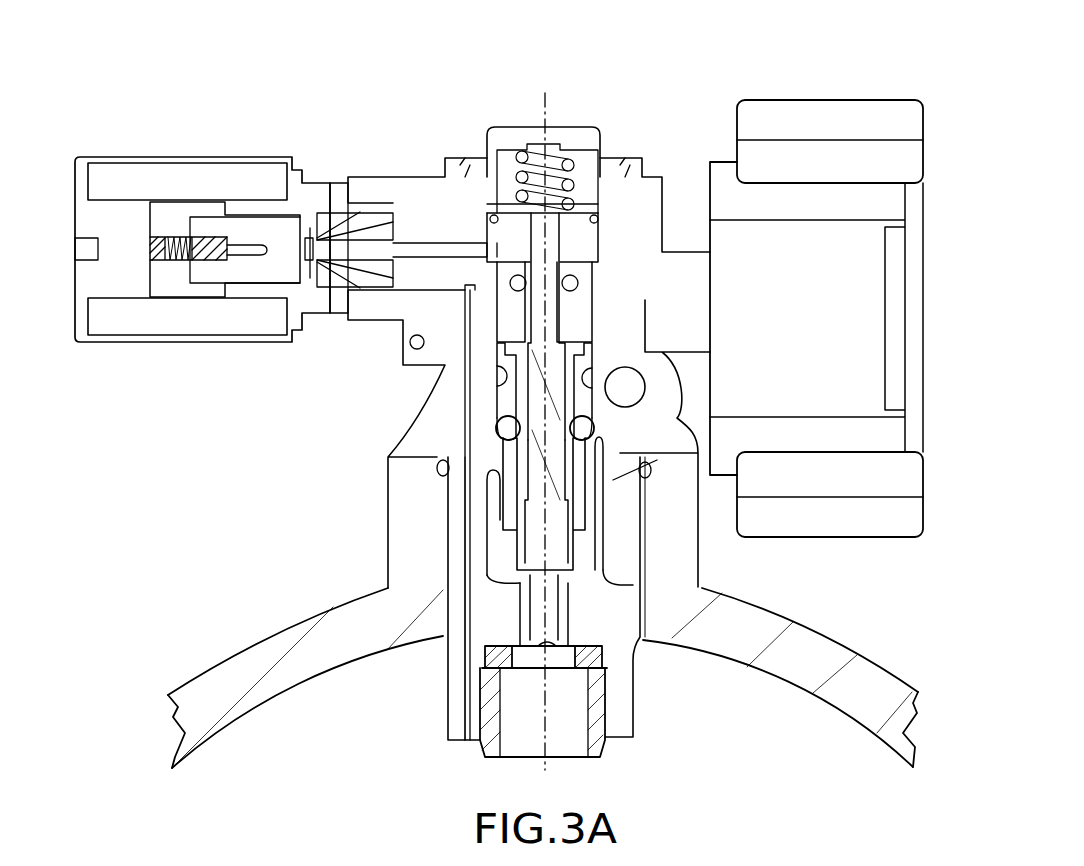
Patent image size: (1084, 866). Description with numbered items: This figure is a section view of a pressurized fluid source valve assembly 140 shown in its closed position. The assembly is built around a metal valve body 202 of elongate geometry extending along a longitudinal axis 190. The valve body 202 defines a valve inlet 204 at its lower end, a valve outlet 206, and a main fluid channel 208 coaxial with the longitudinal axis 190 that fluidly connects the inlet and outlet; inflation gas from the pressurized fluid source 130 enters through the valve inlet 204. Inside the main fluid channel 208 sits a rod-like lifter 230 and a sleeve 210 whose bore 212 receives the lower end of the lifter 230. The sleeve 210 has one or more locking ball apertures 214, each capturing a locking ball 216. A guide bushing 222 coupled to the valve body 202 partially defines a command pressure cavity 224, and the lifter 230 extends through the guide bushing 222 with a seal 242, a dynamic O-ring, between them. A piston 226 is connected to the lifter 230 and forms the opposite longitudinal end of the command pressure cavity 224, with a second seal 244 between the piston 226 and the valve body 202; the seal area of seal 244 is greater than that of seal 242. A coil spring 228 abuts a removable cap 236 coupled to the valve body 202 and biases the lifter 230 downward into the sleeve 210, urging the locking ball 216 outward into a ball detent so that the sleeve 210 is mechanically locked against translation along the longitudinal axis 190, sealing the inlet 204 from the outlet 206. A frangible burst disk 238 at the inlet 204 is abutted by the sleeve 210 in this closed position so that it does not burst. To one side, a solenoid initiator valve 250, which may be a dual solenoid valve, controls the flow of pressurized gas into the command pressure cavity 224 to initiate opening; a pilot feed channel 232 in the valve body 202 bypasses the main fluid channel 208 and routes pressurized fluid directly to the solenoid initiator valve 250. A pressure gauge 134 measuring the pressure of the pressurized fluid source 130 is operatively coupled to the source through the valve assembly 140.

The pressurized fluid source 130 is at (235, 650).
The pressure gauge 134 is at (852, 540).
The valve assembly 140 is at (332, 127).
The longitudinal axis 190 is at (545, 93).
The valve body 202 is at (408, 185).
The valve inlet 204 is at (552, 720).
The valve outlet 206 is at (612, 470).
The main fluid channel 208 is at (612, 525).
The sleeve 210 is at (525, 608).
The bore 212 is at (520, 520).
The locking ball aperture 214 is at (497, 450).
The locking ball 216 is at (496, 427).
The guide bushing 222 is at (593, 272).
The command pressure cavity 224 is at (583, 243).
The piston 226 is at (600, 216).
The spring 228 is at (568, 182).
The lifter 230 is at (528, 390).
The channel 232 is at (462, 545).
The removable cap 236 is at (502, 132).
The frangible burst disk 238 is at (585, 667).
The seal 242 is at (527, 252).
The seal 244 is at (590, 222).
The solenoid initiator valve 250 is at (155, 150).